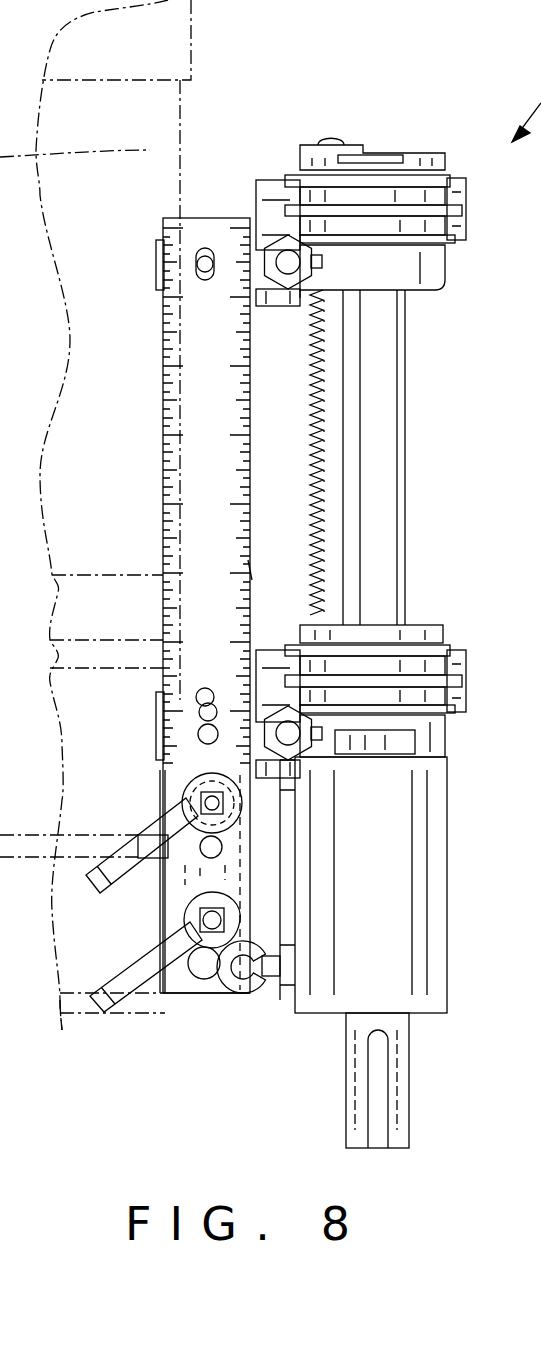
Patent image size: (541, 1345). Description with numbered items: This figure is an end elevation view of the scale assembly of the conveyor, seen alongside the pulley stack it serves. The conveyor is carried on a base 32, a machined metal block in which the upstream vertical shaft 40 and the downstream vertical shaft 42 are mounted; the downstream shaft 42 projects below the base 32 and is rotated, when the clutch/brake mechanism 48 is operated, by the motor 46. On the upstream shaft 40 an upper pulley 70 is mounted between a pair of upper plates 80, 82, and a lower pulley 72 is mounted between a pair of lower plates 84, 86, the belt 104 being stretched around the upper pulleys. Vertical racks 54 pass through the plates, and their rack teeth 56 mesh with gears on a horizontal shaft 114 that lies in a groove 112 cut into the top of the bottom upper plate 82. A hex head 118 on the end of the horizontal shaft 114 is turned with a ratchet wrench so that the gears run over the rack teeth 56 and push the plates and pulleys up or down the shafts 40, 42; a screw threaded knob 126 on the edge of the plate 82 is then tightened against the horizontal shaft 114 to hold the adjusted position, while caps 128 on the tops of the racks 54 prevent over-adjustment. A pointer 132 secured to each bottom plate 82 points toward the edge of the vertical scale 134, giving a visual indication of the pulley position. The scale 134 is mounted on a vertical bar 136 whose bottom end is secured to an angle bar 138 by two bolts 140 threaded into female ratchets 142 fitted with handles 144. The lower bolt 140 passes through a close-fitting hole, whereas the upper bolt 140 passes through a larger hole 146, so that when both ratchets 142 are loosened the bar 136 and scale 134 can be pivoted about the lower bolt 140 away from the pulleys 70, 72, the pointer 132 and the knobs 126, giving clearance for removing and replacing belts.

The base 32 is at (437, 892).
The upstream vertical shaft 40 is at (405, 475).
The downstream vertical shaft 42 is at (398, 1092).
The motor 46 is at (150, 152).
The clutch/brake mechanism 48 is at (70, 745).
The vertical rack 54 is at (310, 415).
The rack teeth 56 is at (310, 496).
The upper pulley 70 is at (445, 182).
The lower pulley 72 is at (440, 662).
The upper plate 80 is at (420, 152).
The bottom upper plate 82 is at (445, 288).
The lower plate 84 is at (420, 628).
The lower plate 86 is at (445, 740).
The belt 104 is at (466, 222).
The groove 112 is at (289, 245).
The horizontal shaft 114 is at (296, 275).
The hex head 118 is at (294, 300).
The screw threaded knob 126 is at (156, 270).
The cap 128 is at (360, 144).
The pointer 132 is at (250, 240).
The vertical scale 134 is at (258, 580).
The vertical bar 136 is at (177, 893).
The angle bar 138 is at (250, 992).
The bolt 140 is at (200, 796).
The female ratchet 142 is at (206, 785).
The handle 144 is at (80, 872).
The larger hole 146 is at (182, 800).